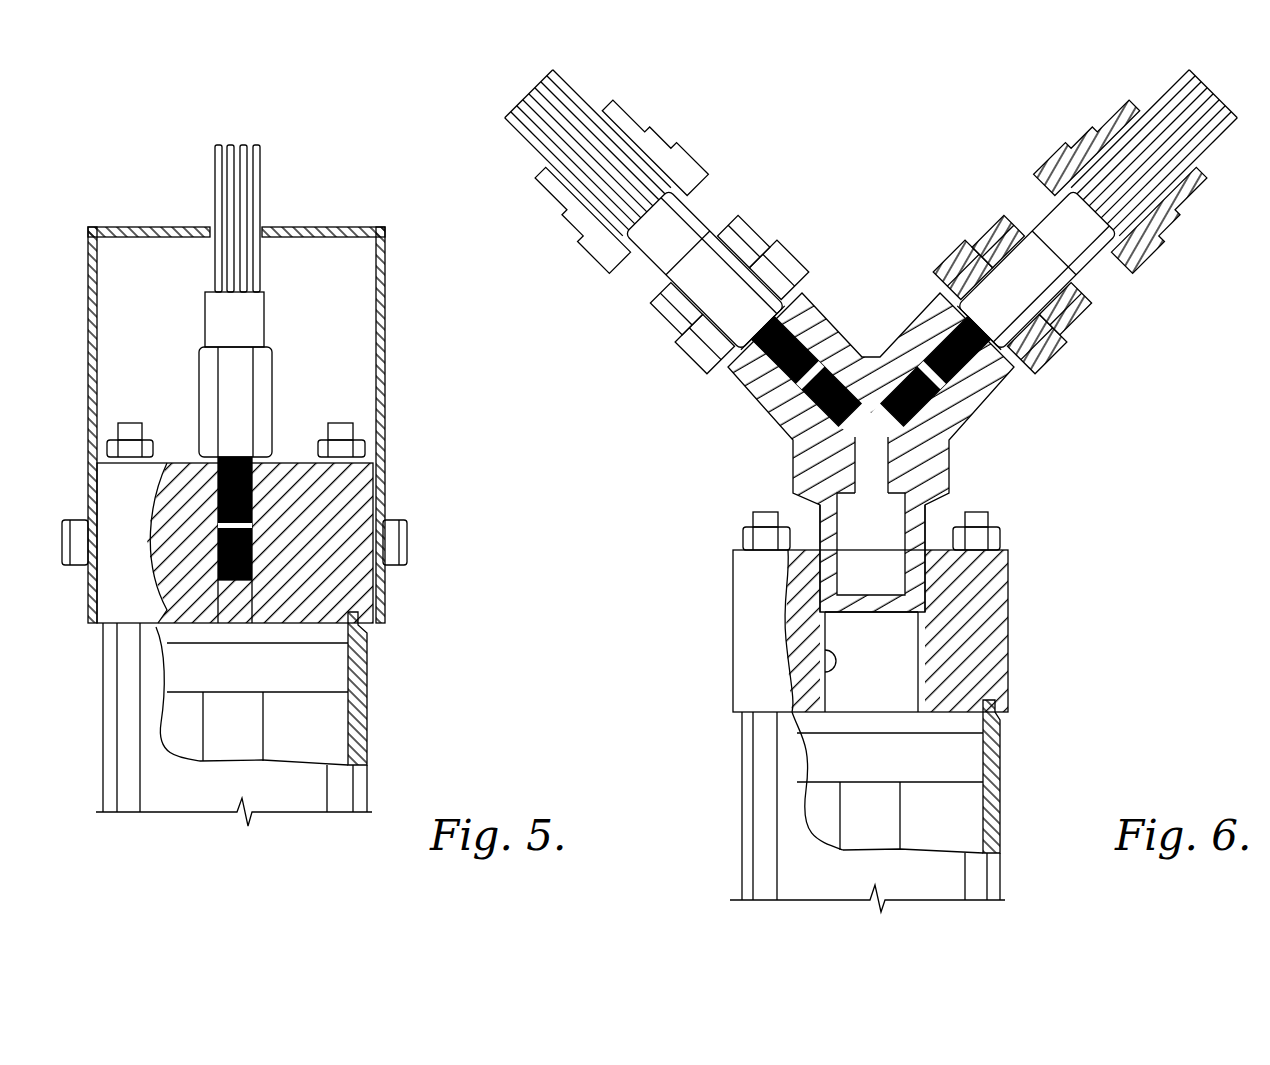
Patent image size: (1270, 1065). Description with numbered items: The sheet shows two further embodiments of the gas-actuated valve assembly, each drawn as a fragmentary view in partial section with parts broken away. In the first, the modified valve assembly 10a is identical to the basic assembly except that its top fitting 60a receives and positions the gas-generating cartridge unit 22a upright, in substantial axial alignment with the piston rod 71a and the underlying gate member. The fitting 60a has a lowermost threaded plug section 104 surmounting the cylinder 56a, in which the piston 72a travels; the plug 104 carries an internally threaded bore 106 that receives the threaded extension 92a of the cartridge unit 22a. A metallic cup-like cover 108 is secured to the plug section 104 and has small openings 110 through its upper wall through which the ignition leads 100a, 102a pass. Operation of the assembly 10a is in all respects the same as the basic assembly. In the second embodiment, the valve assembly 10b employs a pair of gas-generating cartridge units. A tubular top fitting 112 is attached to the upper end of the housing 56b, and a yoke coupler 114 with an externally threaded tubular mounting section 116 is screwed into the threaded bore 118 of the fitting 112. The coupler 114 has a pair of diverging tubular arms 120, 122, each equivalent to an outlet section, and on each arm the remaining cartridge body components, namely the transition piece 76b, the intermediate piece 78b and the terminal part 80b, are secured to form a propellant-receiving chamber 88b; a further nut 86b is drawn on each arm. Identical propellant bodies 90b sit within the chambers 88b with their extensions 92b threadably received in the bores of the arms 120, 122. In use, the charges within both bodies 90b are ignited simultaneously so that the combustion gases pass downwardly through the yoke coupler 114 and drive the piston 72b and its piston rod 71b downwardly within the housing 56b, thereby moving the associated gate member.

In FIG. 5, the valve assembly 10a is at (264, 464).
In FIG. 5, the ignition lead 100a is at (233, 225).
In FIG. 5, the ignition lead 102a is at (268, 135).
In FIG. 5, the small openings 110 is at (262, 232).
In FIG. 5, the cartridge unit 22a is at (287, 368).
In FIG. 5, the internally threaded bore 106 is at (248, 500).
In FIG. 5, the threaded extension 92a is at (255, 465).
In FIG. 5, the cup-like cover 108 is at (92, 478).
In FIG. 5, the top fitting 60a is at (264, 602).
In FIG. 5, the threaded plug section 104 is at (165, 613).
In FIG. 5, the piston 72a is at (333, 663).
In FIG. 5, the cylinder 56a is at (355, 695).
In FIG. 5, the piston rod 71a is at (250, 738).
In FIG. 6, the valve assembly 10b is at (873, 491).
In FIG. 6, the yoke coupler 114 is at (940, 473).
In FIG. 6, the tubular mounting section 116 is at (828, 522).
In FIG. 6, the tubular top fitting 112 is at (1003, 608).
In FIG. 6, the threaded bore 118 is at (830, 661).
In FIG. 6, the piston 72b is at (965, 752).
In FIG. 6, the piston rod 71b is at (880, 832).
In FIG. 6, the housing 56b is at (1000, 803).
In FIG. 6, the extension 92b is at (768, 405).
In FIG. 6, the propellant body 90b is at (715, 245).
In FIG. 6, the transition piece 76b is at (720, 362).
In FIG. 6, the lock nut 86b is at (768, 238).
In FIG. 6, the intermediate piece 78b is at (660, 300).
In FIG. 6, the propellant-receiving chamber 88b is at (648, 183).
In FIG. 6, the terminal part 80b is at (590, 236).
In FIG. 6, the tubular arm 120 is at (825, 312).
In FIG. 6, the tubular arm 122 is at (838, 352).